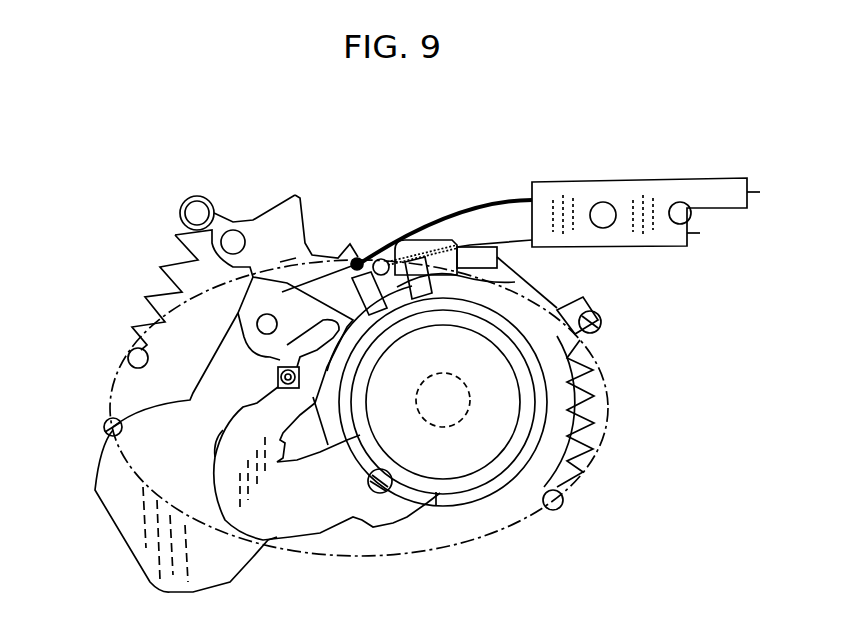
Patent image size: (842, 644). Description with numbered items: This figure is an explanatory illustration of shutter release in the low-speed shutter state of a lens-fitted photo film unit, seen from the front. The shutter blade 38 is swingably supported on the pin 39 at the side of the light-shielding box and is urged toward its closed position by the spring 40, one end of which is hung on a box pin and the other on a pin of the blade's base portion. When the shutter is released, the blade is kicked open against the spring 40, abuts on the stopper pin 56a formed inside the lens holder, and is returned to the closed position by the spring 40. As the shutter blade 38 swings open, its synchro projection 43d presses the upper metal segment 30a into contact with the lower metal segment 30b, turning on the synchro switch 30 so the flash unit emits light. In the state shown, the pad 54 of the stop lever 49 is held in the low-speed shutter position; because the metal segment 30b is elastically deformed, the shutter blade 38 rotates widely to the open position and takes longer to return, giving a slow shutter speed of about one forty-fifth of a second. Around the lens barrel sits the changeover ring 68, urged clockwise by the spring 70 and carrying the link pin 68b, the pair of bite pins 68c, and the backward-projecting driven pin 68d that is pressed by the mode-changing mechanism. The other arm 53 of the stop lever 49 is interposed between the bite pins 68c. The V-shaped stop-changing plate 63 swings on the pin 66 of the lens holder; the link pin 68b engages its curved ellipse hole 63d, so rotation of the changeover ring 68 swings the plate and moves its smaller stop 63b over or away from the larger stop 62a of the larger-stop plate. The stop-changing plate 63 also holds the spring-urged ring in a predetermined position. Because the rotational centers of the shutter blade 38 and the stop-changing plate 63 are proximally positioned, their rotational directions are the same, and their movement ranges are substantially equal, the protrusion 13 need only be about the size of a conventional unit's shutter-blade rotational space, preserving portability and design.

The protrusion 13 is at (607, 443).
The synchro switch 30 is at (606, 174).
The upper metal segment 30a is at (470, 207).
The lower metal segment 30b is at (508, 240).
The shutter blade 38 is at (250, 585).
The pin 39 is at (233, 230).
The spring 40 is at (160, 278).
The synchro projection 43d is at (347, 256).
The stop lever 49 is at (428, 240).
The arm 53 is at (372, 265).
The pad 54 is at (487, 247).
The stopper pin 56a is at (104, 422).
The larger stop 62a is at (458, 423).
The stop-changing plate 63 is at (382, 540).
The smaller stop 63b is at (366, 487).
The curved ellipse hole 63d is at (238, 340).
The pin 66 is at (257, 324).
The changeover ring 68 is at (577, 398).
The link pin 68b is at (222, 432).
The bite pins 68c is at (515, 282).
The driven pin 68d is at (601, 322).
The spring 70 is at (570, 468).